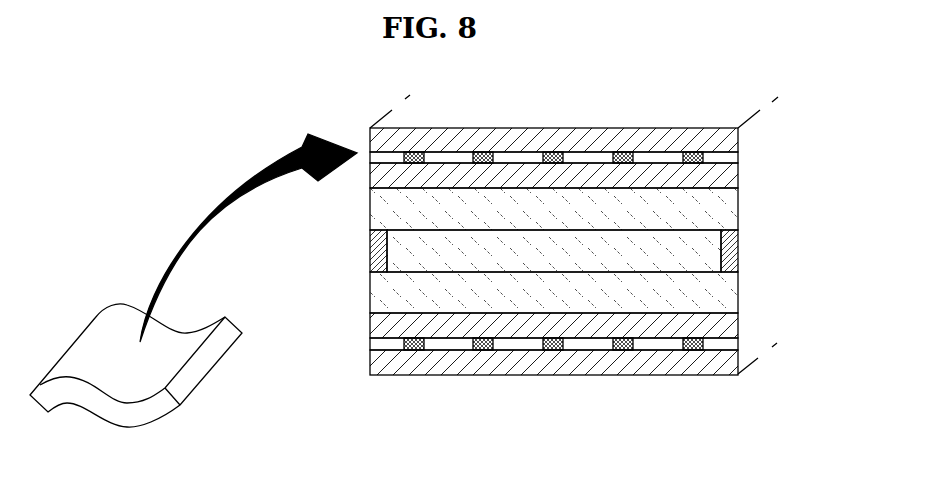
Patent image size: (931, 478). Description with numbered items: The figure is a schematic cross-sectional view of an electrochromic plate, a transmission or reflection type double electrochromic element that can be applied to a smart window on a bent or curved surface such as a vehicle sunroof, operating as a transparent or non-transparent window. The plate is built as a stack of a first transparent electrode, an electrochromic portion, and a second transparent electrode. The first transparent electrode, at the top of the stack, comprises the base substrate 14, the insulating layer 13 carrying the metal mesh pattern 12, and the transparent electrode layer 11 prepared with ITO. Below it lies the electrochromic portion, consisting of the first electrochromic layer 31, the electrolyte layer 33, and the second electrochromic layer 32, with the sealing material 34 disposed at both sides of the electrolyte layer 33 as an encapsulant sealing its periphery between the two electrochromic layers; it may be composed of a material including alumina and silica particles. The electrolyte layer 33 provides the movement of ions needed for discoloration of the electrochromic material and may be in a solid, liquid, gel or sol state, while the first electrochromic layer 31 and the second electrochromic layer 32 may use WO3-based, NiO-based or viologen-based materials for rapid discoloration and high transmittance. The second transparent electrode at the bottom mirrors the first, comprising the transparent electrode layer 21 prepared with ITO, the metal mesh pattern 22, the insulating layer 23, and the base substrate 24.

The transparent electrode layer 11 is at (731, 178).
The metal mesh pattern 12 is at (696, 152).
The insulating layer 13 is at (731, 158).
The base substrate 14 is at (731, 137).
The transparent electrode layer 21 is at (733, 325).
The metal mesh pattern 22 is at (695, 351).
The insulating layer 23 is at (733, 344).
The base substrate 24 is at (735, 366).
The first electrochromic layer 31 is at (733, 212).
The second electrochromic layer 32 is at (733, 288).
The electrolyte layer 33 is at (720, 258).
The sealing material 34 is at (734, 240).